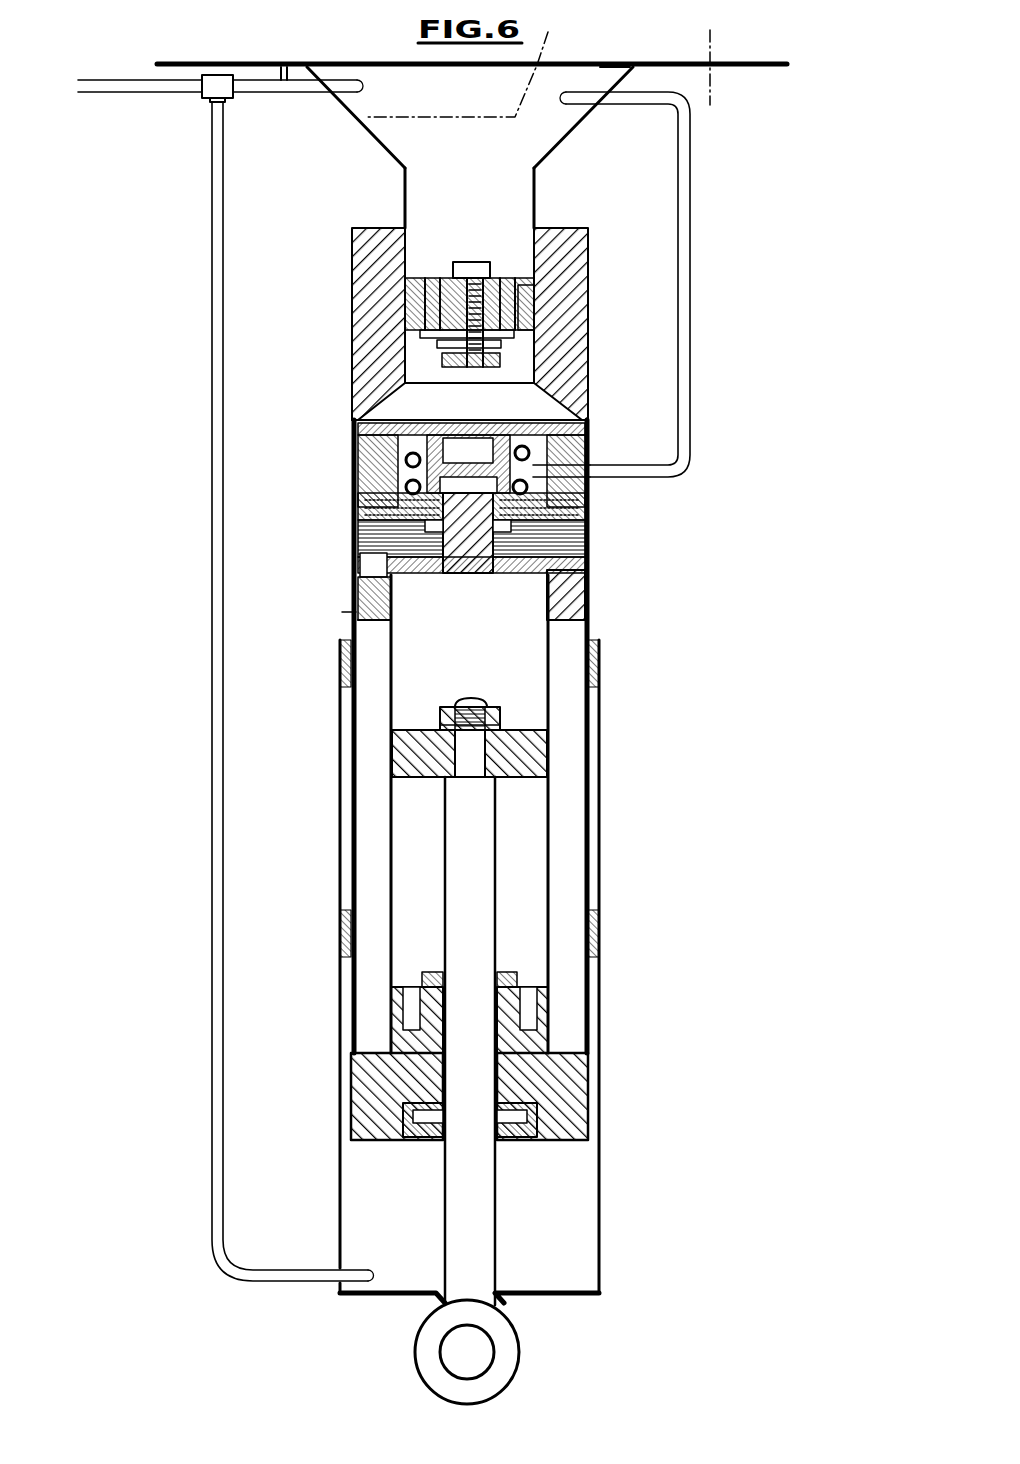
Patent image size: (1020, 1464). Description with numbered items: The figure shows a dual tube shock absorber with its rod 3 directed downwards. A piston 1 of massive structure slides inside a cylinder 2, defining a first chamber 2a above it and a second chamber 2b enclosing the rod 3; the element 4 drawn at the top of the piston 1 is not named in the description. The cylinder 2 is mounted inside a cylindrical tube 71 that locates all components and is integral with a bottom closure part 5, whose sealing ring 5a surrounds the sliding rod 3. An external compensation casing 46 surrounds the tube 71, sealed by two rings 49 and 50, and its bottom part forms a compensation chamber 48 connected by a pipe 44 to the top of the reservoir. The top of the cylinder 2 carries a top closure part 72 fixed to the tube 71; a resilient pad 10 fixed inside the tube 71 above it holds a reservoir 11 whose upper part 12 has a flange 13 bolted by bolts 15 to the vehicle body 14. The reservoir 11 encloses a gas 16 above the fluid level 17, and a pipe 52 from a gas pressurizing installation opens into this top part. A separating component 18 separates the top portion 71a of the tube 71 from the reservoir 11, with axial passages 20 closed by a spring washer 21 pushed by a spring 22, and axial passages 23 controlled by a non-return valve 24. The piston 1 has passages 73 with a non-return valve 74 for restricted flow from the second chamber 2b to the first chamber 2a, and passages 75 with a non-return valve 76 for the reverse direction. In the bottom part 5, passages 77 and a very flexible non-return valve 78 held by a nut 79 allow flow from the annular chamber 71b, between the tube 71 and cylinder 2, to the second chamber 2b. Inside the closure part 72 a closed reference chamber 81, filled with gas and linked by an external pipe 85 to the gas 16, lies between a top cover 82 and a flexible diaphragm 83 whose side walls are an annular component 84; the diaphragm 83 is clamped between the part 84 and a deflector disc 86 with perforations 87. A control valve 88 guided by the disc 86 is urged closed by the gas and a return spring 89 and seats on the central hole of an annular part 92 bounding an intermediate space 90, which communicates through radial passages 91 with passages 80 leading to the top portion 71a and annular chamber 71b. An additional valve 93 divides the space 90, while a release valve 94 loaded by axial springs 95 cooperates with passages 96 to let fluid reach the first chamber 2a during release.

The piston 1 is at (550, 752).
The cylinder 2 is at (550, 838).
The first chamber 2a is at (518, 658).
The second chamber 2b is at (527, 887).
The rod 3 is at (472, 918).
The piston nut 4 is at (500, 717).
The closure part 5 is at (553, 1092).
The sealing ring 5a is at (570, 1117).
The resilient pad 10 is at (356, 290).
The reservoir 11 is at (400, 196).
The upper part 12 is at (347, 112).
The flange 13 is at (286, 73).
The body 14 is at (582, 62).
The bolts 15 is at (710, 42).
The gas 16 is at (598, 80).
The level of the fluid 17 is at (469, 62).
The separating component 18 is at (407, 305).
The axial passages 20 is at (412, 335).
The spring washer 21 is at (530, 345).
The spring 22 is at (510, 342).
The axial passages 23 is at (532, 303).
The non-return valve 24 is at (498, 270).
The pipe 44 is at (218, 825).
The compensation casing 46 is at (600, 1022).
The compensation chamber 48 is at (557, 1207).
The sealing ring 49 is at (340, 670).
The sealing ring 50 is at (340, 917).
The pipe 52 is at (119, 90).
The cylindrical tube 71 is at (600, 793).
The top portion 71a is at (397, 408).
The annular chamber 71b is at (563, 972).
The top closure part 72 is at (577, 610).
The passages 73 is at (395, 740).
The non-return valve 74 is at (425, 730).
The passages 75 is at (393, 738).
The non-return valve 76 is at (430, 778).
The passages 77 is at (403, 1023).
The non-return valve 78 is at (420, 985).
The nut 79 is at (432, 970).
The passages 80 is at (360, 445).
The reference chamber 81 is at (407, 472).
The top cover 82 is at (586, 428).
The flexible diaphragm 83 is at (358, 502).
The annular component 84 is at (590, 452).
The pipe 85 is at (683, 278).
The deflector disc 86 is at (570, 517).
The perforations 87 is at (586, 543).
The control valve 88 is at (466, 560).
The return spring 89 is at (413, 430).
The intermediate space 90 is at (500, 532).
The radial passages 91 is at (372, 514).
The annular part 92 is at (560, 560).
The additional valve 93 is at (433, 532).
The release valve 94 is at (380, 580).
The axial springs 95 is at (346, 612).
The passages 96 is at (370, 558).